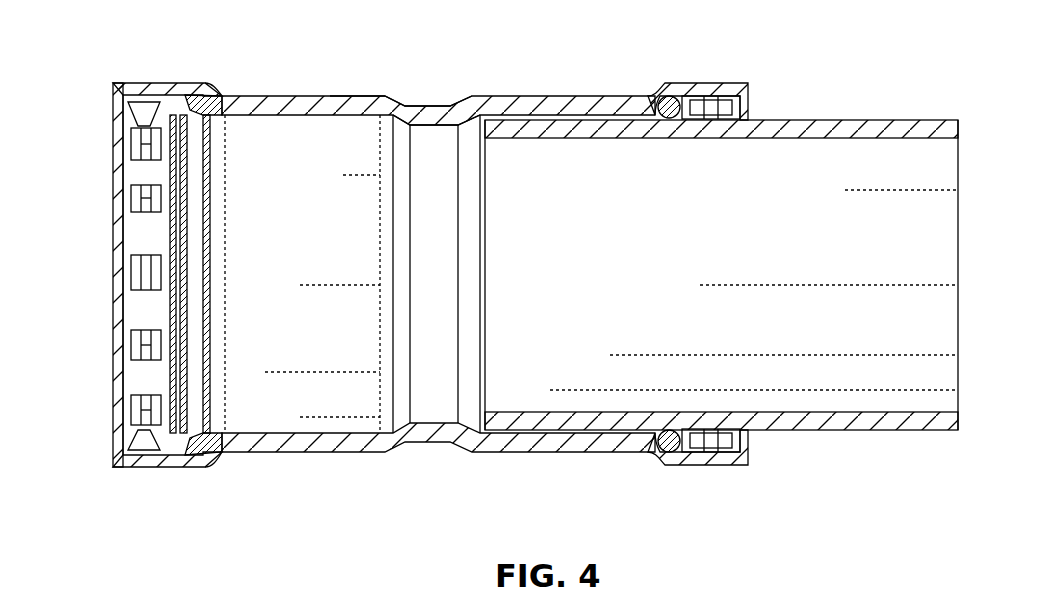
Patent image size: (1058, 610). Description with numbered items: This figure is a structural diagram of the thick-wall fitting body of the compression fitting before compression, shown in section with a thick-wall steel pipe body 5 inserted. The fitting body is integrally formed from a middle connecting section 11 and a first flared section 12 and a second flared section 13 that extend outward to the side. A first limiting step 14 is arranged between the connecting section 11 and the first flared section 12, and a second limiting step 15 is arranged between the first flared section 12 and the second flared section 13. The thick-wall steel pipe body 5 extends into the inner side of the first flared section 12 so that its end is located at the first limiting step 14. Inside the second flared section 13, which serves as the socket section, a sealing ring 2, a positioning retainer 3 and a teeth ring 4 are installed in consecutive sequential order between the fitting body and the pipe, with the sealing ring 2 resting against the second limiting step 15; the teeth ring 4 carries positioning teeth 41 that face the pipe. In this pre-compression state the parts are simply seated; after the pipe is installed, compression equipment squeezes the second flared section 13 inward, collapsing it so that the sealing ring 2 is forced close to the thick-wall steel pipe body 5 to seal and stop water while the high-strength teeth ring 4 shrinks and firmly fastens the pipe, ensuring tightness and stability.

The sealing ring 2 is at (178, 102).
The positioning retainer 3 is at (178, 230).
The teeth ring 4 is at (138, 382).
The positioning teeth 41 is at (113, 200).
The thick-wall steel pipe body 5 is at (580, 124).
The connecting section 11 is at (442, 105).
The first flared section 12 is at (290, 95).
The second flared section 13 is at (153, 82).
The first limiting step 14 is at (368, 97).
The second limiting step 15 is at (213, 90).